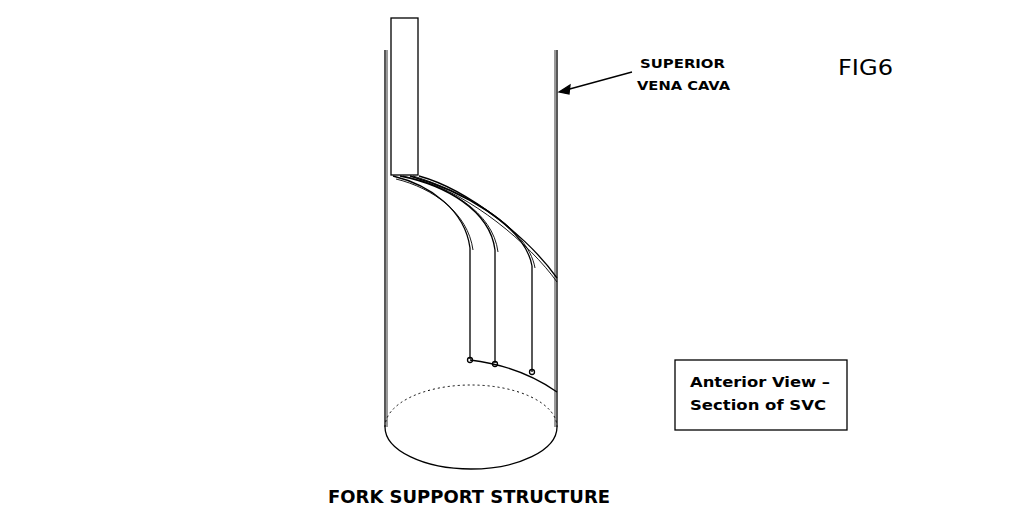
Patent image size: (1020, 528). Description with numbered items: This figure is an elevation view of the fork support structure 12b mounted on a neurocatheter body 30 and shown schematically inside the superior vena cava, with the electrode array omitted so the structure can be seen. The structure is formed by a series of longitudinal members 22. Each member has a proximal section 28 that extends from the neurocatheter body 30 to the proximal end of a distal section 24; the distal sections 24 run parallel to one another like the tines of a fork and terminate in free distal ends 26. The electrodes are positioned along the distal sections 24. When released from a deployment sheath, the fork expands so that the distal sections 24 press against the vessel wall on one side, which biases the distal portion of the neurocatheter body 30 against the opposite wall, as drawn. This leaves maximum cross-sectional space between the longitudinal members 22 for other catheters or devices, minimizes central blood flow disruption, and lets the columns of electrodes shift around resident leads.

The neurocatheter body 30 is at (386, 44).
The longitudinal members 22 is at (464, 255).
The proximal sections 28 is at (438, 197).
The fork support structure 12b is at (515, 226).
The distal sections 24 is at (562, 278).
The free distal ends 26 is at (468, 361).